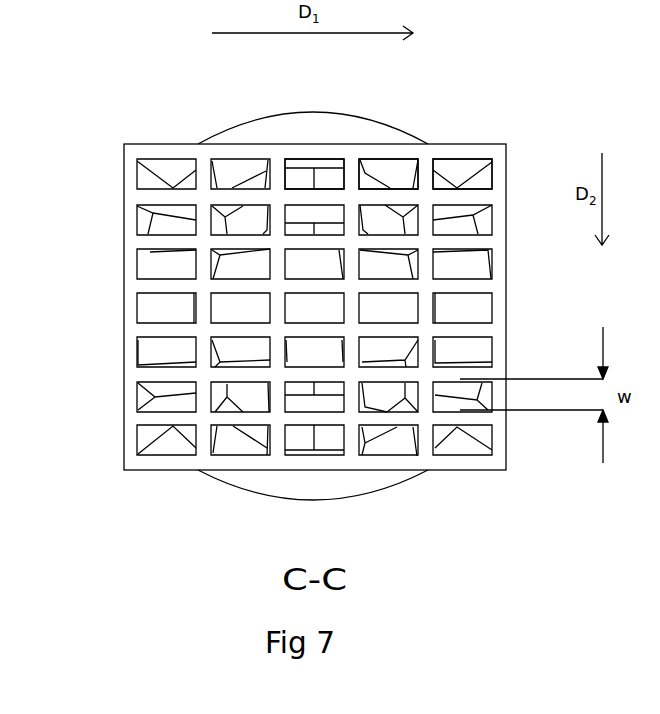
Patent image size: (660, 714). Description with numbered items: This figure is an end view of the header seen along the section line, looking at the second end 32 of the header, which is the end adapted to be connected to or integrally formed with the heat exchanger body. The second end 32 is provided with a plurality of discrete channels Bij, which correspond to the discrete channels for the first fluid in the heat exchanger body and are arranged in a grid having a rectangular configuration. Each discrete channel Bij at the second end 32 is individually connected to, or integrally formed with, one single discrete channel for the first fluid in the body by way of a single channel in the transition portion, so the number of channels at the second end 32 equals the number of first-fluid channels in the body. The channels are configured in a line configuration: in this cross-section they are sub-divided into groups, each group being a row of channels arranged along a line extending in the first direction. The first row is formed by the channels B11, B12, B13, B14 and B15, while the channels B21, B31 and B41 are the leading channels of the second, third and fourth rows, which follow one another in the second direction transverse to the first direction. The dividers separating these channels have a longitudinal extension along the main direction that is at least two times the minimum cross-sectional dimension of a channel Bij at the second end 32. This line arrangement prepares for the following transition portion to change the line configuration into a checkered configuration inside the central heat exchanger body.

The second end 32 is at (472, 150).
The discrete channel Bij is at (170, 177).
The discrete channel B11 is at (178, 167).
The discrete channel B12 is at (230, 165).
The discrete channel B13 is at (302, 165).
The discrete channel B14 is at (367, 166).
The discrete channel B15 is at (443, 165).
The discrete channel B21 is at (157, 213).
The discrete channel B31 is at (157, 260).
The discrete channel B41 is at (158, 308).